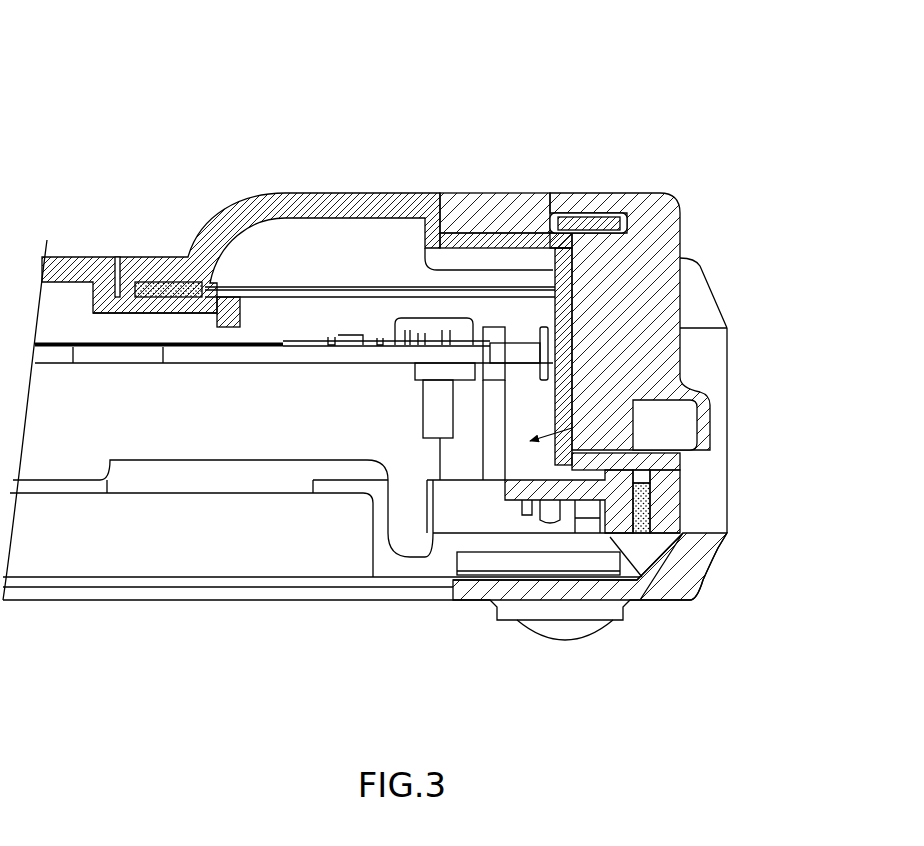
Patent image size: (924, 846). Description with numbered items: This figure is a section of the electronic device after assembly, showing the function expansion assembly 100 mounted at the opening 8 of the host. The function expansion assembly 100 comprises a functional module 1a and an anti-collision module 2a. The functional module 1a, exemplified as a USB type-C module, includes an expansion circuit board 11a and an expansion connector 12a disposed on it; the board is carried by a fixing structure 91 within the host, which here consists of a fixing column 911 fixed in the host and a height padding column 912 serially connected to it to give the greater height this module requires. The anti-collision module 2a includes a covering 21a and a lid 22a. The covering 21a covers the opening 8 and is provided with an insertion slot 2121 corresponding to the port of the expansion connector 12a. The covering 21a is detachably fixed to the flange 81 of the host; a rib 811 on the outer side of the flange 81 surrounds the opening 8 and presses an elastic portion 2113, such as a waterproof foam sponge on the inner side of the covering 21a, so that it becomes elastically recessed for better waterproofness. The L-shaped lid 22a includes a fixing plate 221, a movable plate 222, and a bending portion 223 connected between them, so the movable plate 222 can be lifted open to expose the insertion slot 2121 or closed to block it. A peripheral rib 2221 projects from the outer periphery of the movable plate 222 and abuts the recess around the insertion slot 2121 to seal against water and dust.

The function expansion assembly 100 is at (710, 156).
The functional module 1a is at (295, 200).
The expansion circuit board 11a is at (280, 333).
The expansion connector 12a is at (403, 312).
The anti-collision module 2a is at (580, 268).
The covering 21a is at (388, 186).
The lid 22a is at (605, 268).
The fixing plate 221 is at (540, 205).
The movable plate 222 is at (683, 347).
The bending portion 223 is at (566, 205).
The peripheral rib 2221 is at (607, 208).
The elastic portion 2113 is at (173, 287).
The insertion slot 2121 is at (563, 343).
The opening 8 is at (683, 378).
The flange 81 is at (192, 297).
The rib 811 is at (167, 293).
The fixing structure 91 is at (257, 470).
The fixing column 911 is at (440, 463).
The height padding column 912 is at (437, 397).